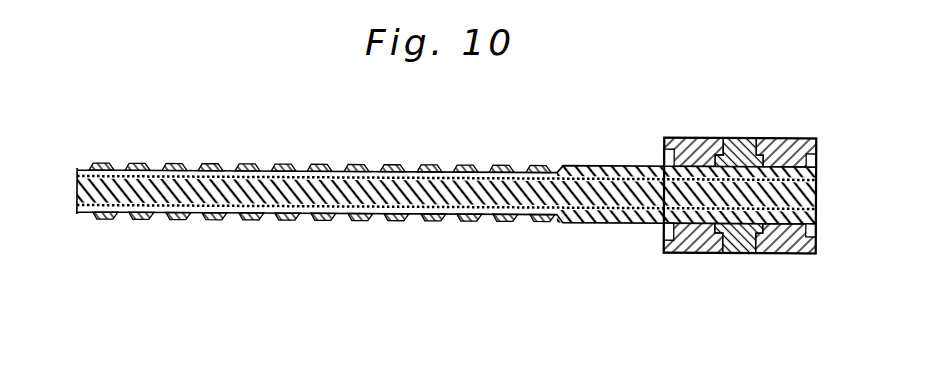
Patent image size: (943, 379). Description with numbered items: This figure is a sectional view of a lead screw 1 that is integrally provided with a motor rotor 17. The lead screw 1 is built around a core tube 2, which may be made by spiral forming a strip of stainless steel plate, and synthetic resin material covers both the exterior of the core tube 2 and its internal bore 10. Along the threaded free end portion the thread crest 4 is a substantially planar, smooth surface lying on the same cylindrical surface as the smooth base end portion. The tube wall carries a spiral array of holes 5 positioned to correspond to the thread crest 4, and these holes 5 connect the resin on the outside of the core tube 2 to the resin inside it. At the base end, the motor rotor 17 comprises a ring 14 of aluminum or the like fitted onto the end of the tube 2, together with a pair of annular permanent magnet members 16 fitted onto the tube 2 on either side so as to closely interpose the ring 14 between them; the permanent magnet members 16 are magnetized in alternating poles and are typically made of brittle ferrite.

The lead screw 1 is at (468, 165).
The core tube 2 is at (816, 177).
The thread crest 4 is at (174, 163).
The holes 5 is at (547, 172).
The internal bore 10 is at (797, 198).
The ring 14 is at (739, 140).
The annular permanent magnet members 16 is at (777, 253).
The motor rotor 17 is at (754, 189).